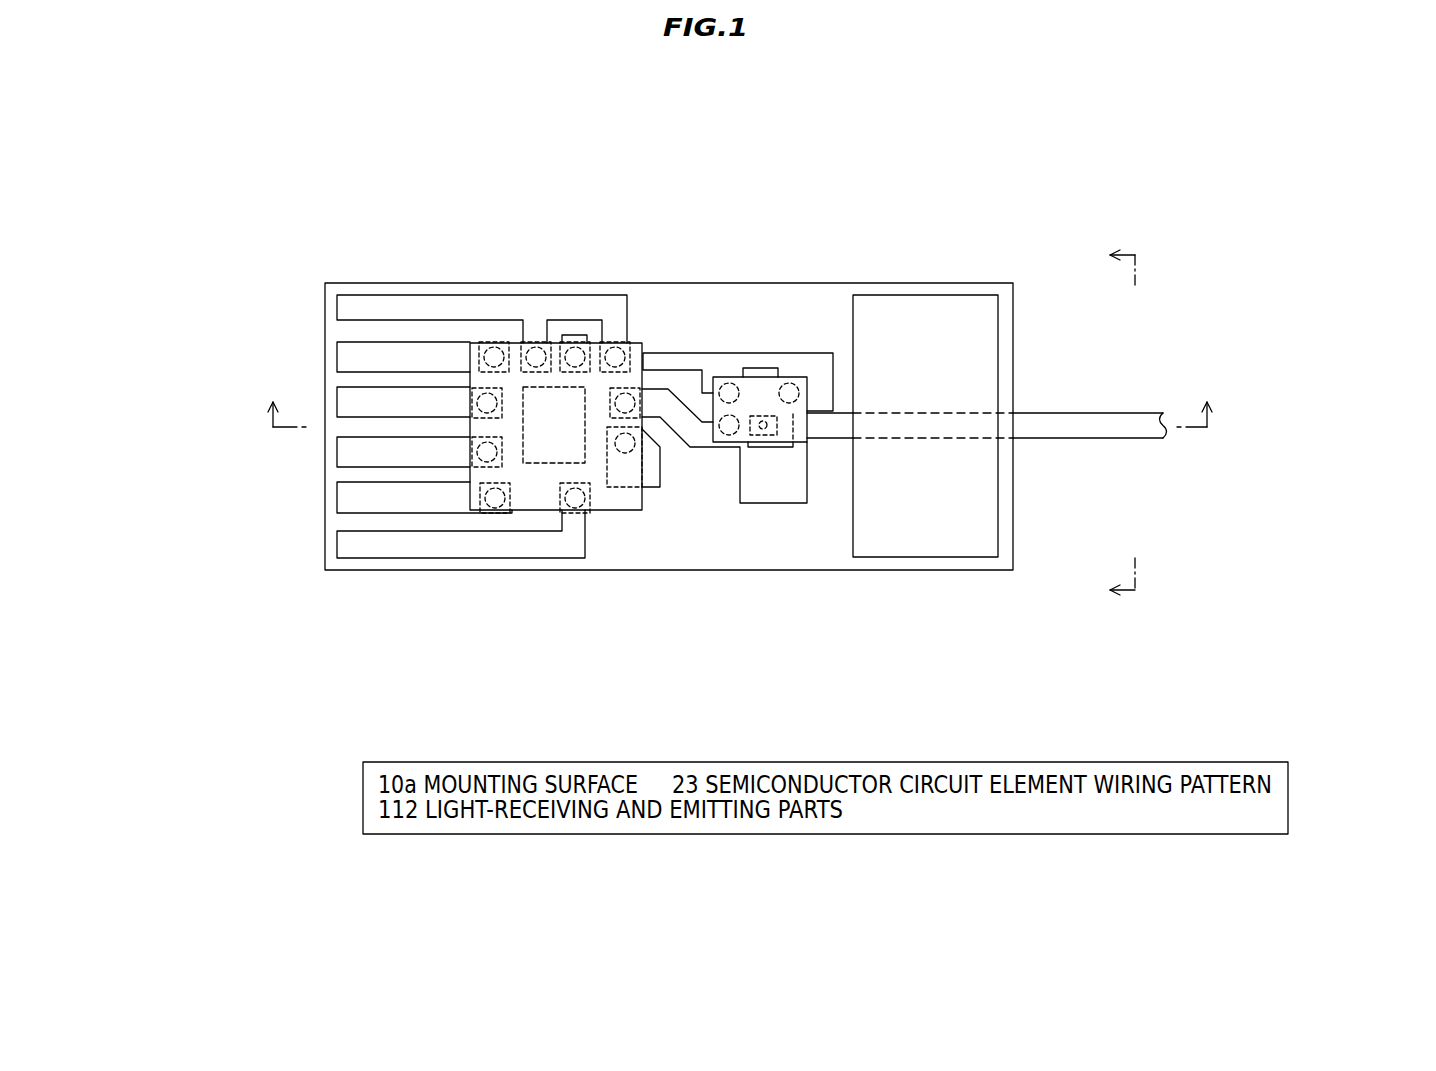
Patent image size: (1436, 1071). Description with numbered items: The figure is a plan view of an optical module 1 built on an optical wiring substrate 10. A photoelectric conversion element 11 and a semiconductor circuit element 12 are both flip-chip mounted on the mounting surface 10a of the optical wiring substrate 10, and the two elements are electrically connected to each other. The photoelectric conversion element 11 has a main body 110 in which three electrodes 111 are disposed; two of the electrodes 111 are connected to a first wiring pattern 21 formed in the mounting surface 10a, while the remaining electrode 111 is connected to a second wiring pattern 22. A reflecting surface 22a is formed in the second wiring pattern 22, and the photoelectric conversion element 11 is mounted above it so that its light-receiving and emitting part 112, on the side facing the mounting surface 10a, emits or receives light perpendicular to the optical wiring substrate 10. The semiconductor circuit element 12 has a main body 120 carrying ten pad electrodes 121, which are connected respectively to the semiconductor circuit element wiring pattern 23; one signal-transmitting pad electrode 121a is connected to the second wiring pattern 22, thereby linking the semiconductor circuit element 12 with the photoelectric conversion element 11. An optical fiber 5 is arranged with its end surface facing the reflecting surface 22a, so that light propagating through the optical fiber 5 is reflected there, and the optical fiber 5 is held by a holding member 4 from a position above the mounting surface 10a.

The optical module 1 is at (322, 165).
The holding member 4 is at (937, 537).
The optical fiber 5 is at (1070, 420).
The optical wiring substrate 10 is at (1013, 347).
The mounting surface 10a is at (646, 295).
The photoelectric conversion element 11 is at (729, 383).
The main body 110 is at (762, 380).
The electrode 111 is at (727, 388).
The light-receiving and emitting part 112 is at (763, 433).
The semiconductor circuit element 12 is at (553, 343).
The main body 120 is at (605, 503).
The pad electrode 121 is at (491, 510).
The pad electrode 121a is at (625, 398).
The first wiring pattern 21 is at (663, 360).
The second wiring pattern 22 is at (698, 445).
The reflecting surface 22a is at (775, 447).
The semiconductor circuit element wiring pattern 23 is at (350, 405).